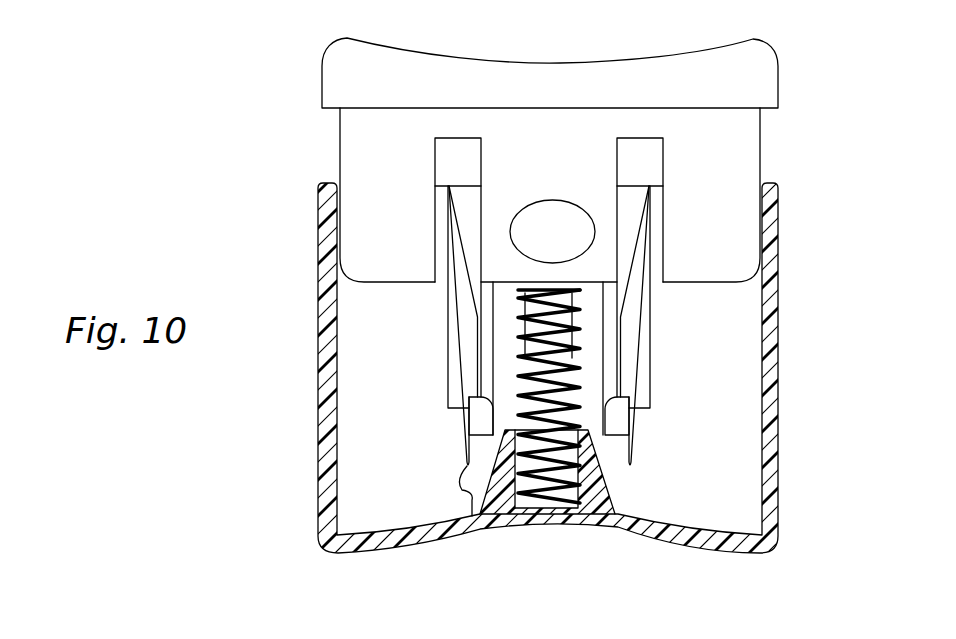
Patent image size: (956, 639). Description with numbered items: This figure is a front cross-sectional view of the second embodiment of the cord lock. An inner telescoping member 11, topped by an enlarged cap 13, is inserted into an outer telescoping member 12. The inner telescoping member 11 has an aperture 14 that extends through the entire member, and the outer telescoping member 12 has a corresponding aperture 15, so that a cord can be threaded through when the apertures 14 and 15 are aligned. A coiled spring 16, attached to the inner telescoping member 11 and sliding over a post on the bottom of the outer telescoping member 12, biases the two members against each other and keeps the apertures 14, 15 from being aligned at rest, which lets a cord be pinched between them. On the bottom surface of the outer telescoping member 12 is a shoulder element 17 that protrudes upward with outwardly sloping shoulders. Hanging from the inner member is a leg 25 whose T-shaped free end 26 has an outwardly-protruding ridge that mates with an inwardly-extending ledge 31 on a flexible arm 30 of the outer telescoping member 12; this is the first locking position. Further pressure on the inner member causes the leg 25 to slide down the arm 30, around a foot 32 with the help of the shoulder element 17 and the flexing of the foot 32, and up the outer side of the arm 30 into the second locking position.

The inner telescoping member 11 is at (755, 137).
The outer telescoping member 12 is at (778, 322).
The enlarged cap 13 is at (573, 72).
The aperture 14 is at (698, 242).
The aperture 15 is at (590, 227).
The coiled spring 16 is at (578, 386).
The shoulder element 17 is at (598, 498).
The leg 25 is at (485, 351).
The T-shaped free end 26 is at (480, 418).
The flexible arm 30 is at (461, 315).
The inwardly-extending ledge 31 is at (468, 402).
The foot 32 is at (480, 513).